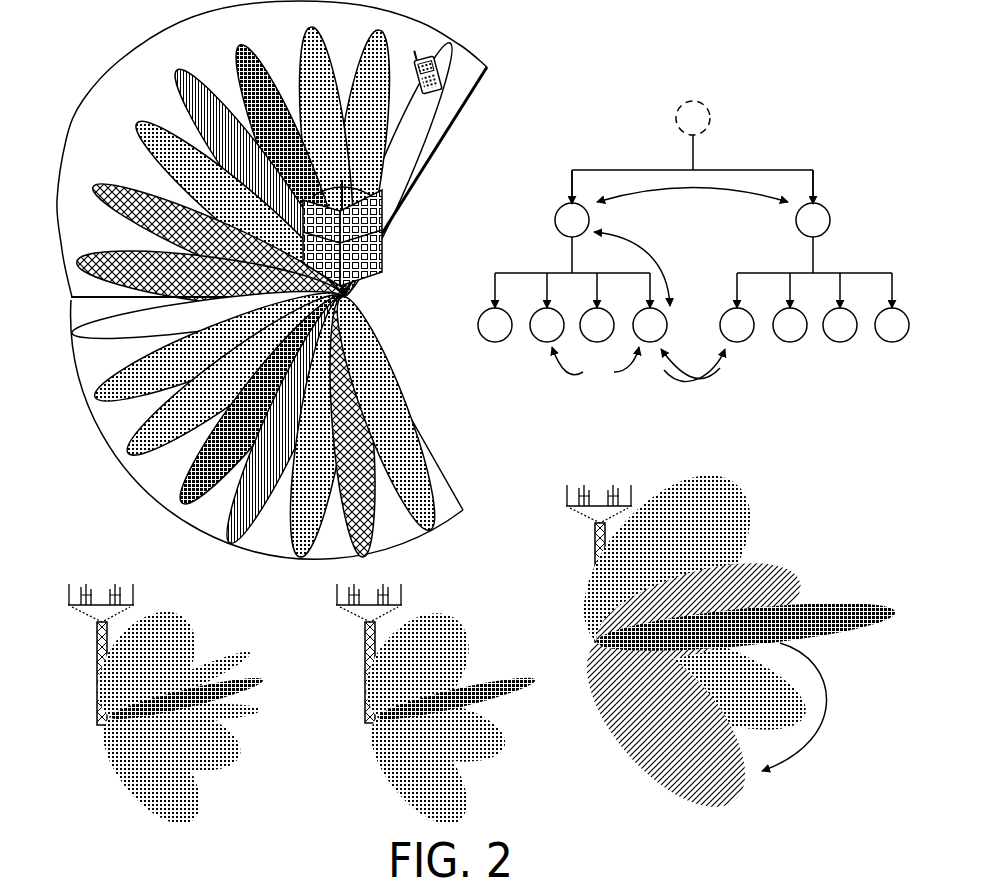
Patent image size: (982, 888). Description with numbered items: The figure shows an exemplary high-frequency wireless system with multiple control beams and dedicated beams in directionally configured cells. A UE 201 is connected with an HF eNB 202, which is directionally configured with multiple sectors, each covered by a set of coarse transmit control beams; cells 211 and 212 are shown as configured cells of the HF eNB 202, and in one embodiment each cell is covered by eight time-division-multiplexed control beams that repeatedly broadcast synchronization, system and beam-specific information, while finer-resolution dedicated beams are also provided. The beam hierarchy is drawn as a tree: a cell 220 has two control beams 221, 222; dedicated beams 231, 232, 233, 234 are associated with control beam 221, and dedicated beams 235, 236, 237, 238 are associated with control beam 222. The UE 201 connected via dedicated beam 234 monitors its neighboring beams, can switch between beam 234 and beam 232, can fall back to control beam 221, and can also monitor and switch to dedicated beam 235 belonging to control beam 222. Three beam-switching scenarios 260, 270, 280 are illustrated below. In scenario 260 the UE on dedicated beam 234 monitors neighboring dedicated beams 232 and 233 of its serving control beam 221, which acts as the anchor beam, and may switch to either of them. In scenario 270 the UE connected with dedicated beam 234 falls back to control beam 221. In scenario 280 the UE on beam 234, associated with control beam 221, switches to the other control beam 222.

The UE 201 is at (421, 47).
The HF eNB 202 is at (384, 247).
The cell 211 is at (271, 154).
The cell 212 is at (259, 426).
The cell 220 is at (710, 120).
The control beam 221 is at (556, 222).
The control beam 222 is at (831, 222).
The dedicated beam 231 is at (495, 343).
The dedicated beam 232 is at (547, 343).
The dedicated beam 233 is at (597, 343).
The dedicated beam 234 is at (650, 343).
The dedicated beam 235 is at (737, 343).
The dedicated beam 236 is at (790, 343).
The dedicated beam 237 is at (840, 343).
The dedicated beam 238 is at (892, 343).
The beam-switching scenario 260 is at (138, 805).
The beam-switching scenario 270 is at (406, 807).
The beam-switching scenario 280 is at (653, 807).